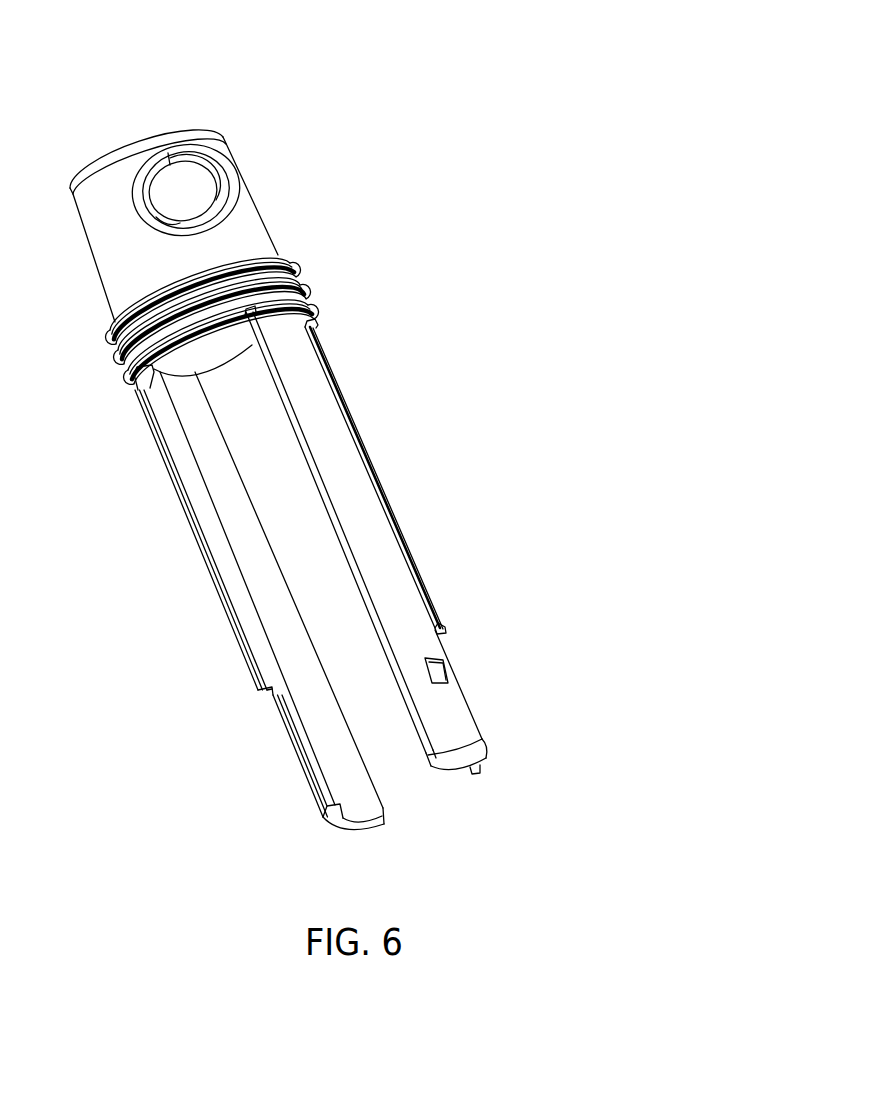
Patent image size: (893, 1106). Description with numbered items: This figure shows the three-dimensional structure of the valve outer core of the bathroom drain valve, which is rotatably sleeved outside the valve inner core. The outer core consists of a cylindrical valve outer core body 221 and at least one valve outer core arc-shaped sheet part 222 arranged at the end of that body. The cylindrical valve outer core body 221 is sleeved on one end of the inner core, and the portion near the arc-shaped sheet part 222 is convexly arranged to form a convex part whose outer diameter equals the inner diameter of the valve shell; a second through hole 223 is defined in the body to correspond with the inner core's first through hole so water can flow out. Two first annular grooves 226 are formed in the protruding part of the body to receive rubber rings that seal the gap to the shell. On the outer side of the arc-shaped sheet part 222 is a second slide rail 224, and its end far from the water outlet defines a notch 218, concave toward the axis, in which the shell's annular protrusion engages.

The notch 218 is at (138, 387).
The cylindrical valve outer core body 221 is at (232, 242).
The valve outer core arc-shaped sheet part 222 is at (370, 547).
The second through hole 223 is at (175, 197).
The second slide rail 224 is at (372, 457).
The first annular grooves 226 is at (302, 293).